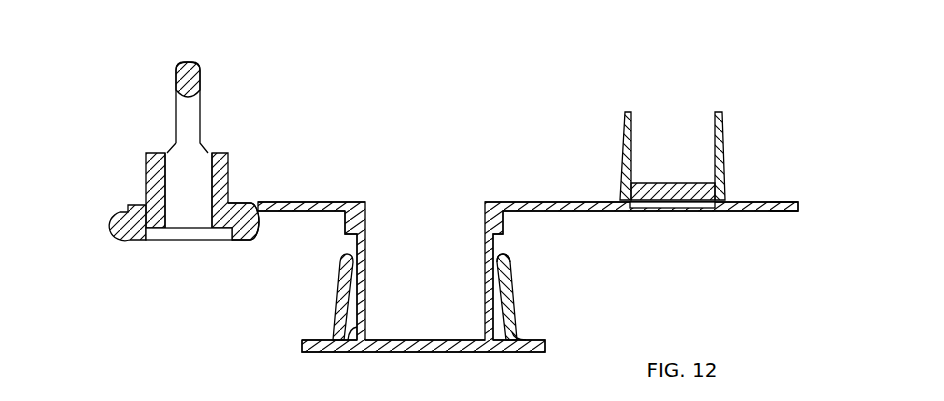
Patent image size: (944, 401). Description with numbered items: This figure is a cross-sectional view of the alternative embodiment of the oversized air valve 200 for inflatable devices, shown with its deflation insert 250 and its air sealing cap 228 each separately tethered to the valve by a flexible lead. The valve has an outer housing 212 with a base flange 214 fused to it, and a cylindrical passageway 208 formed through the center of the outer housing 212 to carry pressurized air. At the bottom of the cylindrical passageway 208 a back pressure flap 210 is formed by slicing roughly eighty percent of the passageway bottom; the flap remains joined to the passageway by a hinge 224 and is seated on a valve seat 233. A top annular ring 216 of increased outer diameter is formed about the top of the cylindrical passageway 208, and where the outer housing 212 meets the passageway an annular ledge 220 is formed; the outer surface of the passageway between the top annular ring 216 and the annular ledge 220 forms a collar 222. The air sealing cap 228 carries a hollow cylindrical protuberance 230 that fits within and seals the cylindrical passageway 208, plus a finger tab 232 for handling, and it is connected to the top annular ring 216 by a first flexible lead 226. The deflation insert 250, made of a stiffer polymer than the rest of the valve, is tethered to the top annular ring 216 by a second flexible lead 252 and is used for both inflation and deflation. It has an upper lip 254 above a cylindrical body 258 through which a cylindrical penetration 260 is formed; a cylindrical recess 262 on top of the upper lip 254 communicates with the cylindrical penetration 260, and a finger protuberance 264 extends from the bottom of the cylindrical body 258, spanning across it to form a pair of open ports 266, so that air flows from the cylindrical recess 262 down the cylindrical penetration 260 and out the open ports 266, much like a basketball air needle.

The oversized air valve 200 is at (448, 122).
The cylindrical passageway 208 is at (367, 237).
The back pressure flap 210 is at (417, 352).
The outer housing 212 is at (336, 297).
The base flange 214 is at (528, 337).
The top annular ring 216 is at (505, 220).
The annular ledge 220 is at (498, 248).
The collar 222 is at (357, 238).
The hinge 224 is at (492, 352).
The first flexible lead 226 is at (538, 201).
The air sealing cap 228 is at (672, 208).
The hollow cylindrical protuberance 230 is at (722, 112).
The finger tab 232 is at (785, 201).
The valve seat 233 is at (350, 328).
The deflation insert 250 is at (163, 82).
The second flexible lead 252 is at (307, 202).
The upper lip 254 is at (127, 234).
The cylindrical body 258 is at (146, 175).
The cylindrical penetration 260 is at (199, 173).
The cylindrical recess 262 is at (192, 237).
The finger protuberance 264 is at (191, 62).
The open ports 266 is at (185, 110).